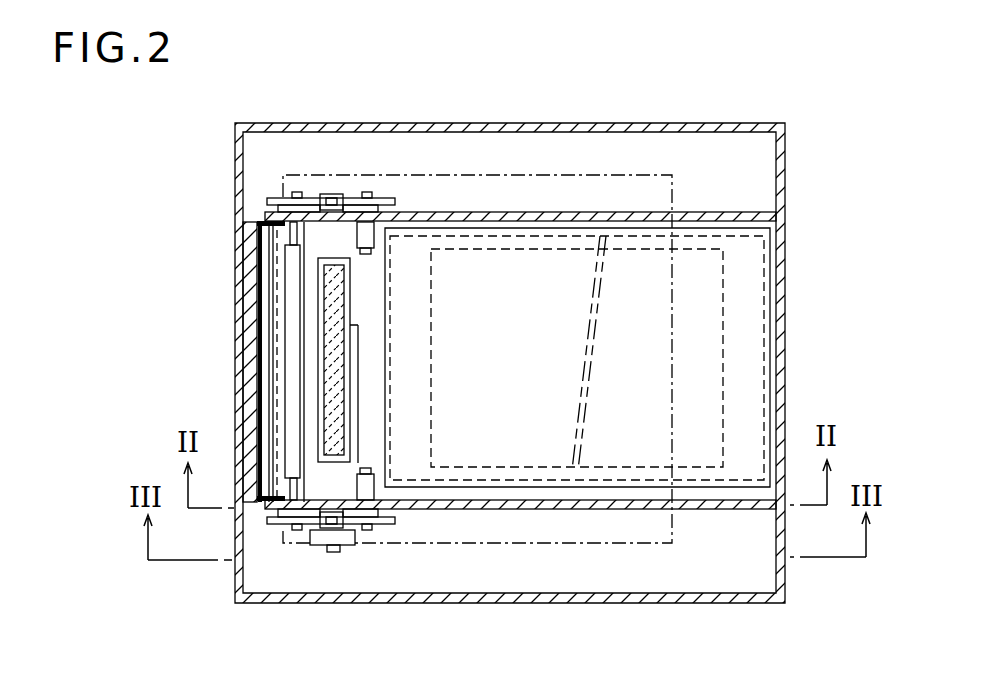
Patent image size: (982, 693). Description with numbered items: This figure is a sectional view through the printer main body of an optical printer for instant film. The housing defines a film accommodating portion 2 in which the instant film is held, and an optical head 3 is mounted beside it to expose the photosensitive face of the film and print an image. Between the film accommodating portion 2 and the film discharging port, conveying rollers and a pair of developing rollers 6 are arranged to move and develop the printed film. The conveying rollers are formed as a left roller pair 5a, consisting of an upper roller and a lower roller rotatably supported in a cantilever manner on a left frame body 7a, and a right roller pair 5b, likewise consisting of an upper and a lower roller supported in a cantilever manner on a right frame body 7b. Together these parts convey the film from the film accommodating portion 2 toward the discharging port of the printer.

The film accommodating portion 2 is at (417, 493).
The optical head 3 is at (335, 370).
The left roller pair 5a is at (372, 478).
The right roller pair 5b is at (377, 238).
The developing rollers 6 is at (292, 317).
The left frame body 7a is at (712, 509).
The right frame body 7b is at (690, 211).